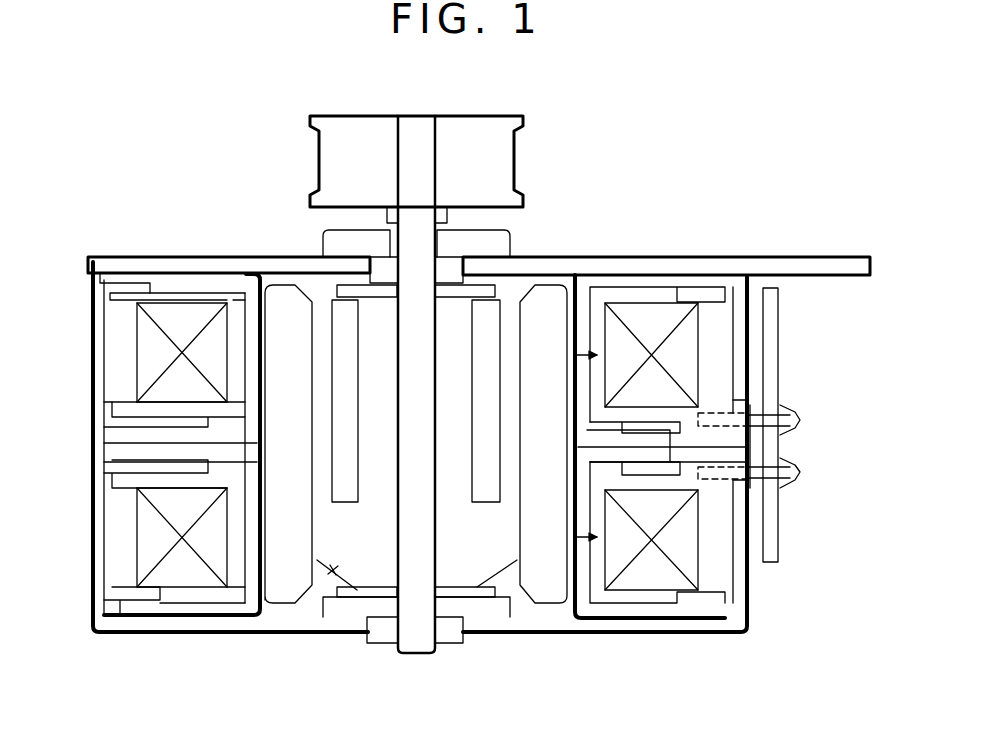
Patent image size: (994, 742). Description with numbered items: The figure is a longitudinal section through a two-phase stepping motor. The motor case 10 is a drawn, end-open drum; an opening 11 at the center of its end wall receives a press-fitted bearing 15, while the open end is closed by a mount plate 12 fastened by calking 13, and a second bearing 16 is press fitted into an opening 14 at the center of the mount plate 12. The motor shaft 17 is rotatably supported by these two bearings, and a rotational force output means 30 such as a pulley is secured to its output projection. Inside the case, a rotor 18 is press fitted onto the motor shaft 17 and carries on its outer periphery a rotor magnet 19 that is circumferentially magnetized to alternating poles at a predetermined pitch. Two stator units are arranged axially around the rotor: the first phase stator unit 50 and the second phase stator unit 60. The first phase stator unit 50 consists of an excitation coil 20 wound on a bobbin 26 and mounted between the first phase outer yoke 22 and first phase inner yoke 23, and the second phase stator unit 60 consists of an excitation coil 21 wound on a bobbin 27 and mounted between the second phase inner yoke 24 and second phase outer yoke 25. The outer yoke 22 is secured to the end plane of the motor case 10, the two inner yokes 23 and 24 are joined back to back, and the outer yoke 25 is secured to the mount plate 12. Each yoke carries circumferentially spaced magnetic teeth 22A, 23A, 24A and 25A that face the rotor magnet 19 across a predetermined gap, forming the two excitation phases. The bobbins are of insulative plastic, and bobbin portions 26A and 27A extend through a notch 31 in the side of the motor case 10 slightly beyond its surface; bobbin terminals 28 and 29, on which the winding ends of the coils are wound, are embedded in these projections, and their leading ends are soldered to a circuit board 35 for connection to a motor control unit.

The motor case 10 is at (86, 506).
The opening 11 is at (445, 640).
The mount plate 12 is at (548, 272).
The calking 13 is at (115, 283).
The opening 14 is at (340, 247).
The bearing 15 is at (385, 643).
The bearing 16 is at (503, 240).
The motor shaft 17 is at (425, 532).
The rotor 18 is at (327, 573).
The rotor magnet 19 is at (275, 525).
The excitation coil 20 is at (178, 600).
The excitation coil 21 is at (150, 350).
The first phase outer yoke 22 is at (135, 614).
The magnetic teeth 22A is at (353, 551).
The first phase inner yoke 23 is at (120, 453).
The magnetic teeth 23A is at (242, 585).
The second phase inner yoke 24 is at (128, 432).
The magnetic teeth 24A is at (240, 300).
The second phase outer yoke 25 is at (188, 277).
The magnetic teeth 25A is at (258, 410).
The bobbin 26 is at (640, 600).
The bobbin portion 26A is at (717, 483).
The bobbin 27 is at (657, 297).
The bobbin portion 27A is at (735, 410).
The bobbin terminal 28 is at (785, 470).
The bobbin terminal 29 is at (785, 420).
The rotational force output means 30 is at (503, 160).
The notch 31 is at (745, 508).
The circuit board 35 is at (773, 450).
The first phase stator unit 50 is at (563, 548).
The second phase stator unit 60 is at (567, 545).